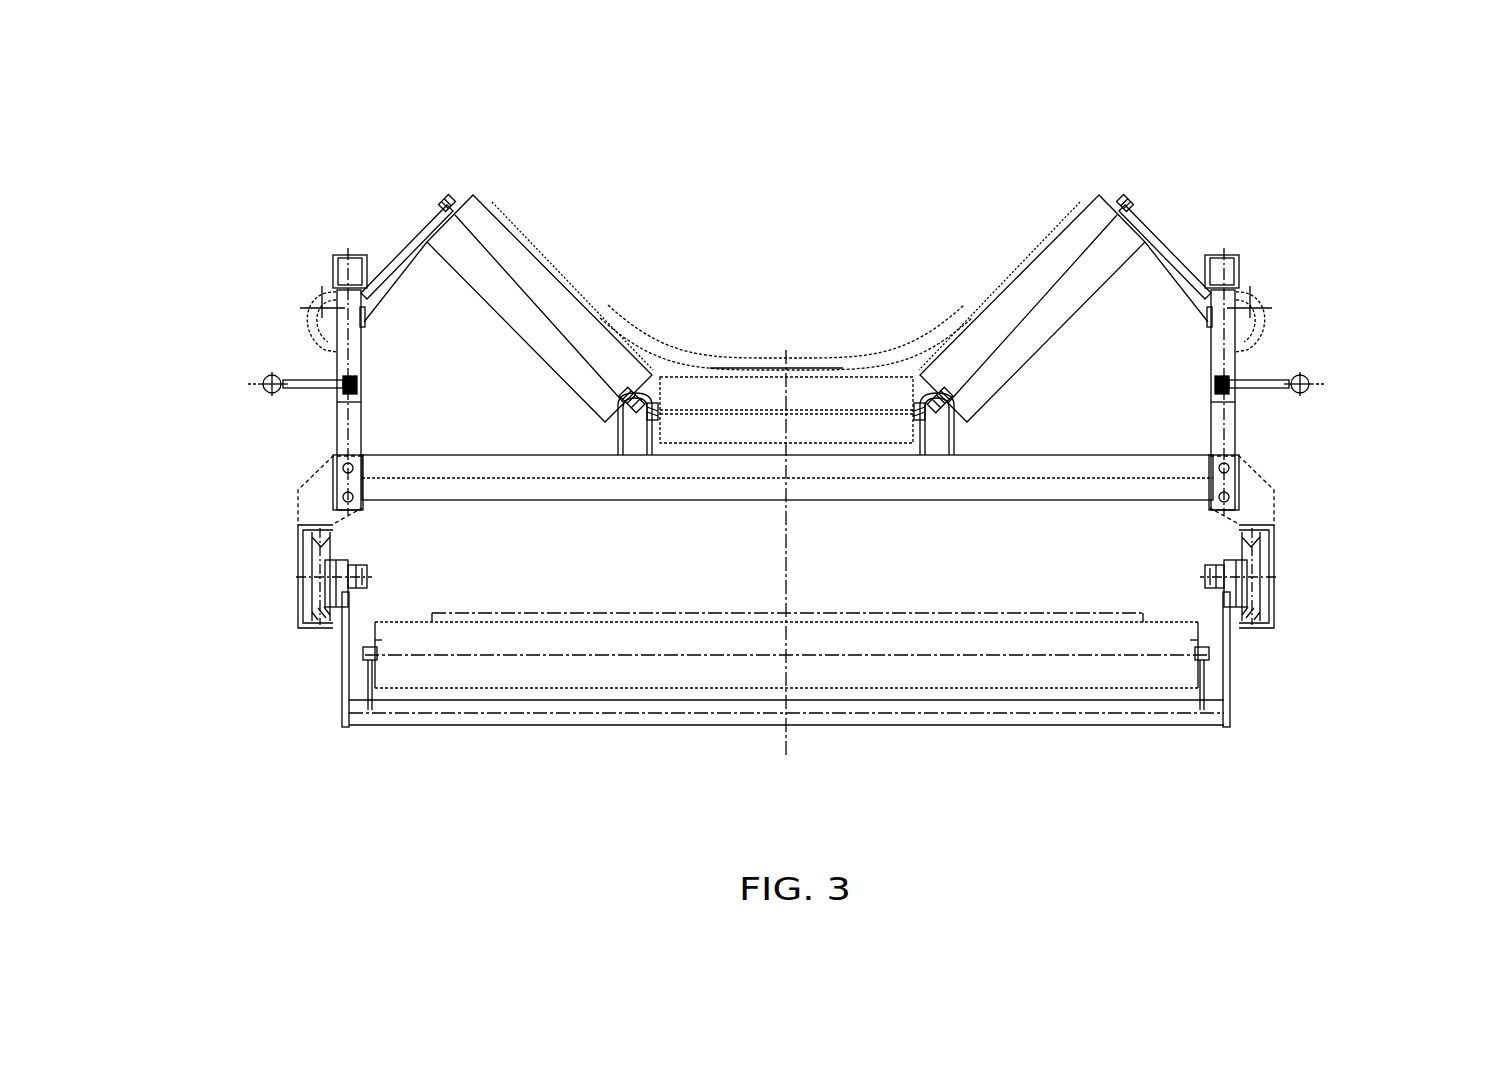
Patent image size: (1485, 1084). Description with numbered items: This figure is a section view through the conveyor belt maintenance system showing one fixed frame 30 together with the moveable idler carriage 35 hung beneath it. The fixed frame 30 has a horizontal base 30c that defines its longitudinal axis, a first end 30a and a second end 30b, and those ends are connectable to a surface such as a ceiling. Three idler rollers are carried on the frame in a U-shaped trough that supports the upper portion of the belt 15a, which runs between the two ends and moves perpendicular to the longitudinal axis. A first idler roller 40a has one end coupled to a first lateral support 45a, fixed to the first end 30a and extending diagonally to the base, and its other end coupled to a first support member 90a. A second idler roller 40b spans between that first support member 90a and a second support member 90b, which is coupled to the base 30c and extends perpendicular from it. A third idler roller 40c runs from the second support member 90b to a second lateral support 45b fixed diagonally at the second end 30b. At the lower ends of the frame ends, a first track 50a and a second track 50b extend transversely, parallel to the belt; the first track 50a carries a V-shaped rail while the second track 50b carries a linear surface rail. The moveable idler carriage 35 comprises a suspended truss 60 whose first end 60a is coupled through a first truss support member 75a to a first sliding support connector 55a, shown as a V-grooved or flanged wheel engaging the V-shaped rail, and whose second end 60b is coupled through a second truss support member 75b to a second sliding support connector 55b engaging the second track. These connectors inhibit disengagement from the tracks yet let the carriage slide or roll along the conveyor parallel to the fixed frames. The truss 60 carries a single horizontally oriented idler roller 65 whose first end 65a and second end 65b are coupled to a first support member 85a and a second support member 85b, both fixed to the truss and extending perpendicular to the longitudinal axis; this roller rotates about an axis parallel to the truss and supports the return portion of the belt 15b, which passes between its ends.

The upper portion of the belt 15a is at (845, 365).
The return portion of the belt 15b is at (660, 615).
The fixed frame 30 is at (781, 504).
The first end of the fixed frame 30a is at (331, 276).
The second end of the fixed frame 30b is at (1247, 273).
The base of the fixed frame 30c is at (488, 492).
The moveable idler carriage 35 is at (783, 714).
The first idler roller 40a is at (532, 312).
The second idler roller 40b is at (710, 425).
The third idler roller 40c is at (1058, 293).
The first lateral support 45a is at (400, 260).
The second lateral support 45b is at (1178, 260).
The first track 50a is at (298, 528).
The second track 50b is at (1277, 512).
The first sliding support connector 55a is at (317, 593).
The second sliding support connector 55b is at (1257, 583).
The truss 60 is at (807, 754).
The first end of the truss 60a is at (360, 730).
The second end of the truss 60b is at (1225, 732).
The idler roller 65 is at (786, 762).
The first end of the idler roller 65a is at (393, 678).
The second end of the idler roller 65b is at (1185, 660).
The first truss support member 75a is at (357, 580).
The second truss support member 75b is at (1217, 582).
The first support member 85a is at (368, 700).
The second support member 85b is at (1197, 707).
The first support member 90a is at (627, 397).
The second support member 90b is at (930, 400).